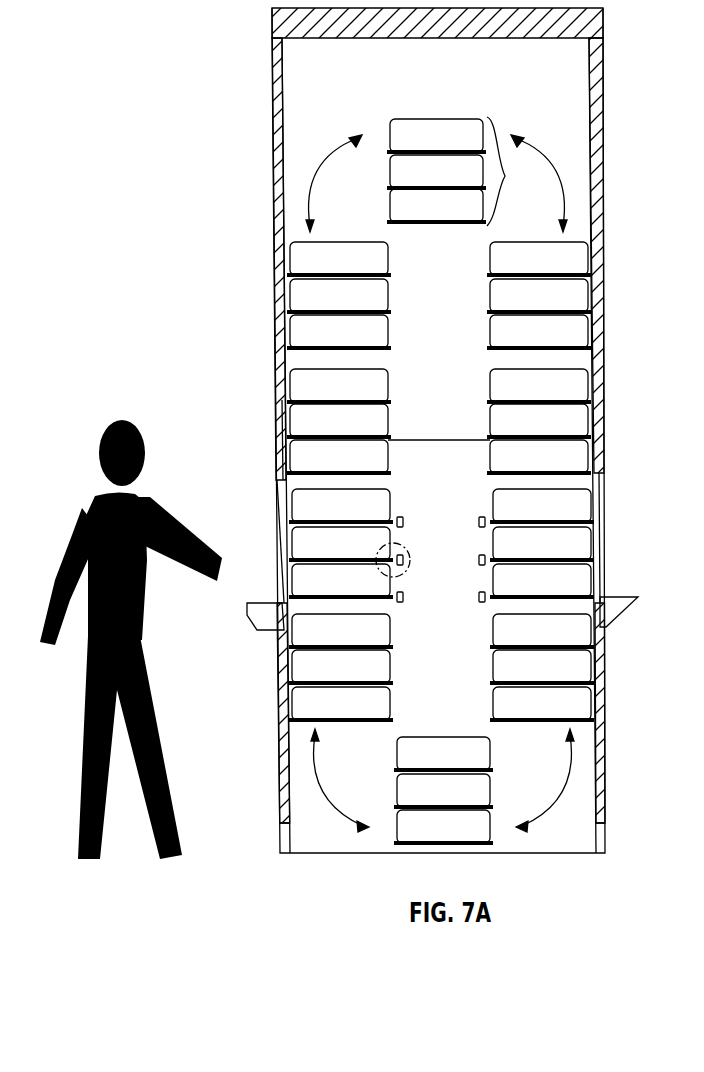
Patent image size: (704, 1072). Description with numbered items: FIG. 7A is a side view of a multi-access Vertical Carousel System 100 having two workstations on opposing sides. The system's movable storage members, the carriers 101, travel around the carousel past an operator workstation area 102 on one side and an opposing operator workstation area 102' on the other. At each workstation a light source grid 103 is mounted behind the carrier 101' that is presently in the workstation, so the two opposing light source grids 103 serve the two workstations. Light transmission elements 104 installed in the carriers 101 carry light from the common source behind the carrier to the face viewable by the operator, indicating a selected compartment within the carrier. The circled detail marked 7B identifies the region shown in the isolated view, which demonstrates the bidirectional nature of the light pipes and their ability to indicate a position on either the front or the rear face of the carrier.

The Vertical Carousel System 100 is at (272, 158).
The carrier 101 is at (469, 175).
The carrier in the workstation 101' is at (296, 577).
The operator workstation area 102 is at (238, 555).
The opposing operator workstation area 102' is at (651, 550).
The light source grid 103 is at (481, 597).
The light transmission element 104 is at (280, 488).
The detail view circle 7B is at (381, 546).